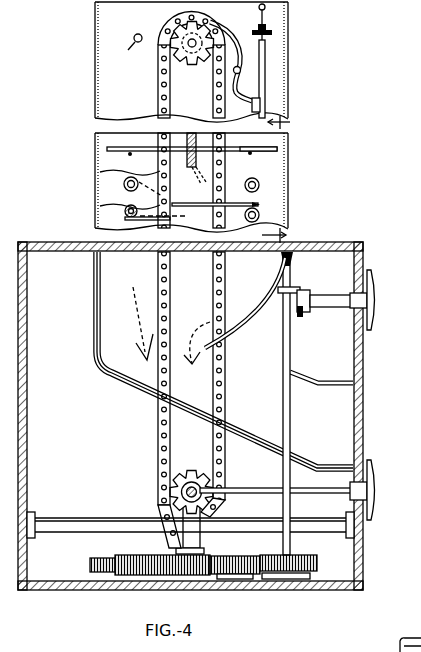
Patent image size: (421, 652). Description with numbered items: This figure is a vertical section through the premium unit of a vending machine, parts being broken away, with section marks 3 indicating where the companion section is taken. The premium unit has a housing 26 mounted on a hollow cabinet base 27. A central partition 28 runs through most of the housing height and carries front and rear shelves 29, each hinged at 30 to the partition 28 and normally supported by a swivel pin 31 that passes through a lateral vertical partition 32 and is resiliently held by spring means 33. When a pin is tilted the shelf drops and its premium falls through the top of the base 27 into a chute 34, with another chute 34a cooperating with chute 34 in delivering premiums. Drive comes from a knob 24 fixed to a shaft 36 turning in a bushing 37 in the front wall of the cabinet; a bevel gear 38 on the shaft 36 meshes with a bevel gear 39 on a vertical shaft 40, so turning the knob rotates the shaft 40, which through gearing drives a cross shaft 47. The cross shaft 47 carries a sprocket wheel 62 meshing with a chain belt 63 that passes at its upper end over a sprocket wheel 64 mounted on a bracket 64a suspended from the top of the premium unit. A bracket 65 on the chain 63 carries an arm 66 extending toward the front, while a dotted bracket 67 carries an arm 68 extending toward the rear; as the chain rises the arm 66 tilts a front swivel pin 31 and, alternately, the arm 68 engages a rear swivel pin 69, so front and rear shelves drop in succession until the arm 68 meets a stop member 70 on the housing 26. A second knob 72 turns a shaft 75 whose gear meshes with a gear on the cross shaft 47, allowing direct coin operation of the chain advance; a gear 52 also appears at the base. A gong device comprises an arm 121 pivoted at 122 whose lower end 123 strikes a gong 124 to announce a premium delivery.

The section line 3- 3 is at (283, 180).
The knob 24 is at (376, 309).
The housing 26 is at (286, 61).
The hollow cabinet base 27 is at (362, 262).
The central partition 28 is at (198, 170).
The shelves 29 is at (278, 148).
The hinge 30 is at (185, 145).
The swivel pins 31 is at (252, 155).
The lateral vertical partition 32 is at (228, 172).
The spring means 33 is at (260, 216).
The chute 34 is at (143, 385).
The chute 34a is at (198, 328).
The shaft 36 is at (325, 295).
The bushing 37 is at (349, 310).
The bevel gear 38 is at (302, 318).
The bevel gear 39 is at (278, 285).
The vertical shaft 40 is at (288, 416).
The cross shaft 47 is at (199, 490).
The gear 52 is at (90, 564).
The sprocket wheel 62 is at (180, 472).
The chain belt 63 is at (218, 418).
The sprocket wheel 64 is at (176, 60).
The bracket 64a is at (176, 13).
The bracket 65 is at (124, 180).
The arm member 66 is at (260, 204).
The bracket 67 is at (173, 218).
The arm 68 is at (124, 218).
The swivel pin 69 is at (125, 188).
The stop member 70 is at (129, 50).
The knob 72 is at (376, 487).
The shaft 75 is at (318, 494).
The arm 121 is at (237, 87).
The pivot 122 is at (237, 66).
The lower end 123 is at (260, 107).
The gong 124 is at (265, 90).